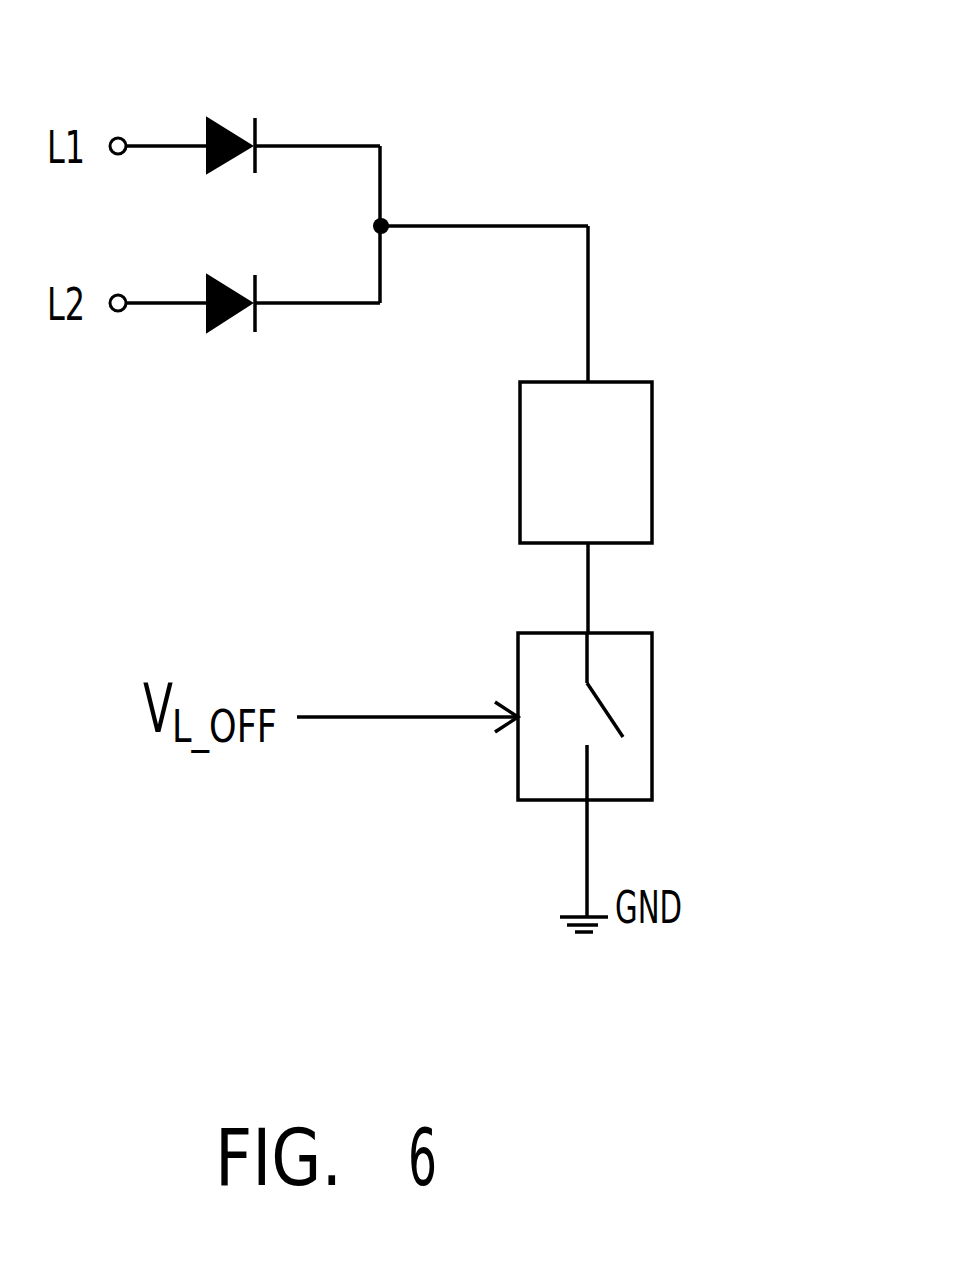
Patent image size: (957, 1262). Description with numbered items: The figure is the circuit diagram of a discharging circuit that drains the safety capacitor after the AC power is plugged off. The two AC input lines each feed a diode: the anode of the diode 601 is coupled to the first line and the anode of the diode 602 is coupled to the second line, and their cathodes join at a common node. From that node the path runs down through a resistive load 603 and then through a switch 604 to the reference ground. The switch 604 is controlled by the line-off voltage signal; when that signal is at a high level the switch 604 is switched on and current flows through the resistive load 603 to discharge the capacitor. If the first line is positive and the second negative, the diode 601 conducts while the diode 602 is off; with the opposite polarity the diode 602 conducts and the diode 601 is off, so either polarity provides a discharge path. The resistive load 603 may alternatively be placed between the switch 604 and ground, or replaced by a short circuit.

The diode 601 is at (240, 127).
The diode 602 is at (235, 323).
The resistive load 603 is at (652, 460).
The switch 604 is at (652, 713).